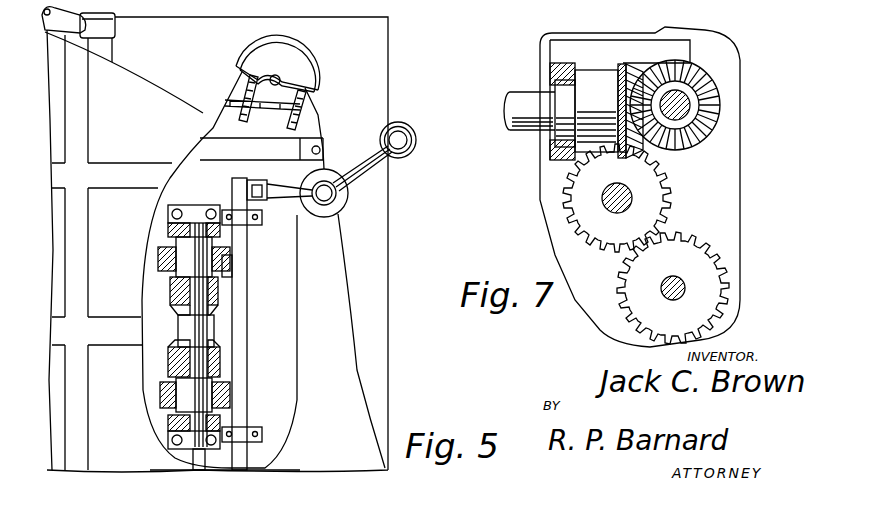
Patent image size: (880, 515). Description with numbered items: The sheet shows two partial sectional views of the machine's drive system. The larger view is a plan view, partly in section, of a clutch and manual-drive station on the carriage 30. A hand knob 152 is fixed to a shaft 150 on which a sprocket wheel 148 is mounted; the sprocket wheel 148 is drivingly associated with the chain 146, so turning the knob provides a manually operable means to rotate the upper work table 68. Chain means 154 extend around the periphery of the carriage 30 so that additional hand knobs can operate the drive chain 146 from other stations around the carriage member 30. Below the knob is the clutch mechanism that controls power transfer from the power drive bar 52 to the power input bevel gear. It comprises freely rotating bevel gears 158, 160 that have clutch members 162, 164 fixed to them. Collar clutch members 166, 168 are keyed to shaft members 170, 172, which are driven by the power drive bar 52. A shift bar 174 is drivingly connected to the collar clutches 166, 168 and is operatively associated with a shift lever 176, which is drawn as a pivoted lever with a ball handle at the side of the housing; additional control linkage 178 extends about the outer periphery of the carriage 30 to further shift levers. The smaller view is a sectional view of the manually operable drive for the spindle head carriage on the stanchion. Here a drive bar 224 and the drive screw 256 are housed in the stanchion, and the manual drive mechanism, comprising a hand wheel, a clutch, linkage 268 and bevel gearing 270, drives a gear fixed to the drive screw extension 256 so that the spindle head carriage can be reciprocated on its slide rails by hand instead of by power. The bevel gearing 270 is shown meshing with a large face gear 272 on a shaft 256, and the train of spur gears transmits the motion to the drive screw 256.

In FIG. 5, the carriage 30 is at (365, 262).
In FIG. 5, the power drive bar 52 is at (187, 457).
In FIG. 5, the upper work table 68 is at (360, 410).
In FIG. 5, the chain 146 is at (290, 120).
In FIG. 5, the sprocket wheel 148 is at (255, 82).
In FIG. 5, the shaft 150 is at (290, 80).
In FIG. 5, the hand knob 152 is at (287, 52).
In FIG. 5, the chain means 154 is at (212, 117).
In FIG. 5, the bevel gear 158 is at (220, 307).
In FIG. 5, the bevel gear 160 is at (168, 345).
In FIG. 5, the clutch member 162 is at (170, 288).
In FIG. 5, the clutch member 164 is at (167, 368).
In FIG. 5, the collar clutch member 166 is at (162, 248).
In FIG. 5, the collar clutch member 168 is at (165, 410).
In FIG. 5, the shaft member 170 is at (210, 240).
In FIG. 5, the shaft member 172 is at (208, 393).
In FIG. 5, the shift bar 174 is at (237, 368).
In FIG. 5, the shift lever 176 is at (357, 172).
In FIG. 5, the control linkage 178 is at (233, 145).
In FIG. 7, the drive bar 224 is at (677, 250).
In FIG. 7, the drive screw 256 is at (682, 105).
In FIG. 7, the linkage 268 is at (537, 120).
In FIG. 7, the bevel gearing 270 is at (627, 95).
In FIG. 7, the bevel gear 272 is at (718, 110).